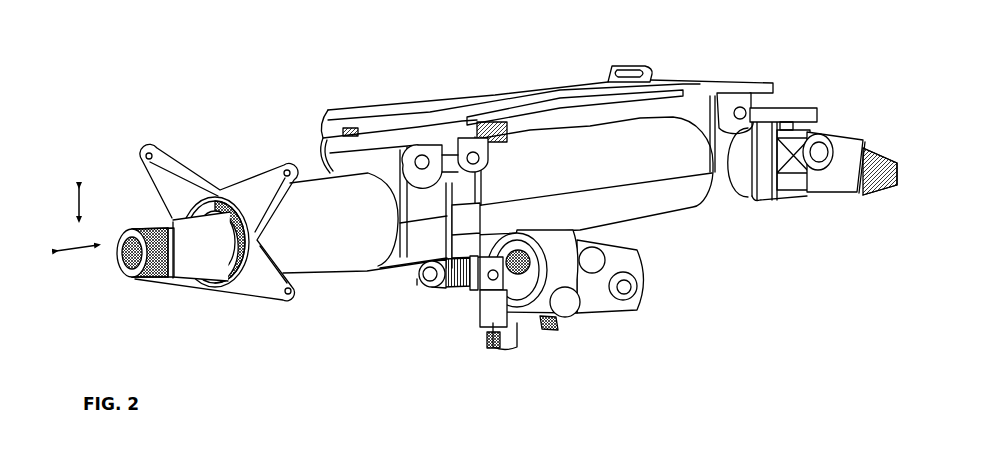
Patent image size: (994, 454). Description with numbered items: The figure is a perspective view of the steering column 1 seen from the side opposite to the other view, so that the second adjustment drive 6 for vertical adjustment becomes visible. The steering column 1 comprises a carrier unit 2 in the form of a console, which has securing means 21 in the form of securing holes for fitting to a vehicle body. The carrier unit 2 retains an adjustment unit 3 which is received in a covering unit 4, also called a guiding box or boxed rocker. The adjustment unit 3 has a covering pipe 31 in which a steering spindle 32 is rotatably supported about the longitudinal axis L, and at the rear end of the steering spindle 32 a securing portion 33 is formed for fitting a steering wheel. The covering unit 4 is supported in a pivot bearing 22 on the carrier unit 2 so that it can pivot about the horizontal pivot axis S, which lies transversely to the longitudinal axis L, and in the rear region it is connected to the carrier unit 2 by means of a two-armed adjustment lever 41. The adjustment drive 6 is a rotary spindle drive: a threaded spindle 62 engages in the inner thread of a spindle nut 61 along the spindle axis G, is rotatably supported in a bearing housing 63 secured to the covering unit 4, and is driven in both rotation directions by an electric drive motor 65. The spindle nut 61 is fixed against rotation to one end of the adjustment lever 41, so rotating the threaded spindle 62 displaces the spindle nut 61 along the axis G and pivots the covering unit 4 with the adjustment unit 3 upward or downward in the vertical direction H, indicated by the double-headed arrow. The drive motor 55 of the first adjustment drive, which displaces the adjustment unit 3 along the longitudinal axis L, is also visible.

The steering column 1 is at (497, 70).
The carrier unit 2 is at (488, 106).
The securing means 21 is at (628, 64).
The pivot bearing 22 is at (740, 104).
The adjustment unit 3 is at (312, 290).
The covering pipe 31 is at (328, 253).
The steering spindle 32 is at (188, 256).
The securing portion 33 is at (143, 232).
The covering unit 4 is at (648, 158).
The adjustment lever 41 is at (463, 192).
The adjustment drive 6 is at (575, 338).
The spindle nut 61 is at (476, 298).
The threaded spindle 62 is at (455, 292).
The bearing housing 63 is at (553, 272).
The drive motor 65 is at (443, 298).
The drive motor 55 is at (630, 263).
The pivot axis S is at (837, 126).
The spindle axis G is at (417, 282).
The vertical direction H is at (70, 198).
The longitudinal axis L is at (90, 262).